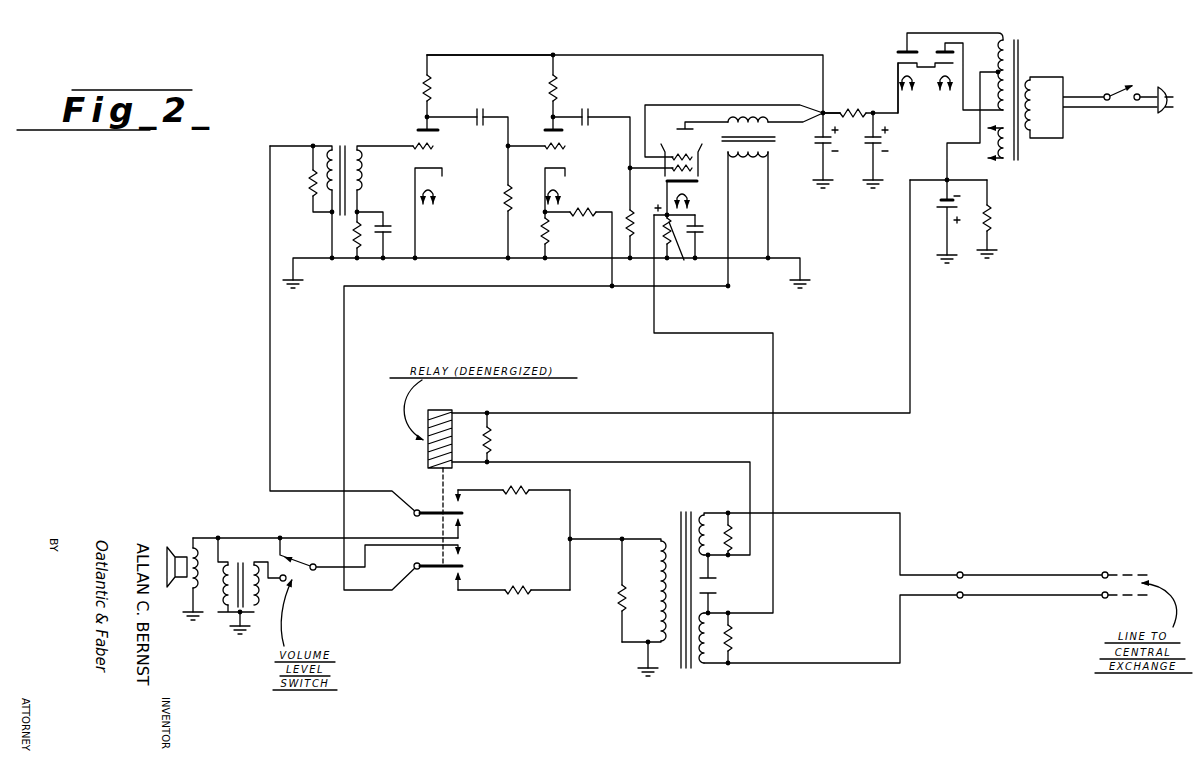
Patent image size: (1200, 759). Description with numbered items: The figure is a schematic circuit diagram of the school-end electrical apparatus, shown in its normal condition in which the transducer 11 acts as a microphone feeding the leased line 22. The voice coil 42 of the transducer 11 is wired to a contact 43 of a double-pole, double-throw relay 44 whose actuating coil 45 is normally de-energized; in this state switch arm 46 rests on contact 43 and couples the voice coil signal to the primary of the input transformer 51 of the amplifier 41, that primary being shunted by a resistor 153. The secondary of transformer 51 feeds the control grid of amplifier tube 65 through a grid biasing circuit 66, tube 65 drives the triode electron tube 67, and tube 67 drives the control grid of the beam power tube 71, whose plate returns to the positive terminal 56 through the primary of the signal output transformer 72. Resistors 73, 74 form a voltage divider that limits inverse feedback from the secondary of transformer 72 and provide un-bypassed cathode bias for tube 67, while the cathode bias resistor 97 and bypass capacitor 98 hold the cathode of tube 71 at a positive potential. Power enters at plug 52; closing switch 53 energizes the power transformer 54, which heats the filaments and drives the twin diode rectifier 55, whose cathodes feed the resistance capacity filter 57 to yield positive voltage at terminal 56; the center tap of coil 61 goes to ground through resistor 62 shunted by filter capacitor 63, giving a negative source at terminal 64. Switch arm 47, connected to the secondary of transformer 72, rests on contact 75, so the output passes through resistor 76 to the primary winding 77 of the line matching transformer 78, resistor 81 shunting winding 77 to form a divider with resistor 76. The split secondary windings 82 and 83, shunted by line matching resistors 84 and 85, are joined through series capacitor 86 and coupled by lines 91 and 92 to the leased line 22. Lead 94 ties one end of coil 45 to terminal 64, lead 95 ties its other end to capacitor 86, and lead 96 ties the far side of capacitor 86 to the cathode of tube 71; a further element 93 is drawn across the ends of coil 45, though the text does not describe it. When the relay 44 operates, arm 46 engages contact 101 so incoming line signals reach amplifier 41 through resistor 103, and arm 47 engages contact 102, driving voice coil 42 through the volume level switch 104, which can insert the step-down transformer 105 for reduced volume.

The transducer 11 is at (182, 545).
The leased line 22 is at (1123, 581).
The amplifier 41 is at (363, 98).
The voice coil 42 is at (197, 545).
The contact 43 is at (462, 538).
The relay 44 is at (421, 499).
The actuating coil 45 is at (440, 418).
The switch arm 46 is at (465, 514).
The switch arm 47 is at (465, 567).
The input transformer 51 is at (337, 146).
The plug 52 is at (1158, 113).
The switch 53 is at (1137, 87).
The power transformer 54 is at (1027, 76).
The twin diode rectifier 55 is at (898, 57).
The terminal 56 is at (826, 110).
The resistance capacity filter 57 is at (853, 138).
The coil 61 is at (1004, 40).
The resistor 62 is at (992, 213).
The filter capacitor 63 is at (941, 213).
The terminal 64 is at (945, 177).
The amplifier tube 65 is at (436, 150).
The grid biasing circuit 66 is at (370, 233).
The triode electron tube 67 is at (567, 138).
The beam power tube 71 is at (697, 180).
The signal output transformer 72 is at (776, 141).
The resistor 73 is at (584, 212).
The resistor 74 is at (551, 230).
The contact 75 is at (459, 574).
The resistor 76 is at (517, 595).
The primary winding 77 is at (663, 539).
The line matching transformer 78 is at (685, 673).
The resistor 81 is at (621, 595).
The secondary winding 82 is at (703, 520).
The secondary winding 83 is at (705, 652).
The line matching resistor 84 is at (731, 536).
The line matching resistor 85 is at (731, 643).
The series capacitor 86 is at (715, 593).
The line 91 is at (865, 512).
The line 92 is at (854, 667).
The resistor 93 is at (490, 437).
The lead 94 is at (689, 412).
The lead 95 is at (595, 463).
The lead 96 is at (776, 565).
The cathode bias resistor 97 is at (678, 244).
The bypass capacitor 98 is at (703, 233).
The contact 101 is at (468, 500).
The contact 102 is at (467, 550).
The resistor 103 is at (514, 481).
The volume level switch 104 is at (306, 571).
The step-down transformer 105 is at (232, 592).
The resistor 153 is at (310, 181).